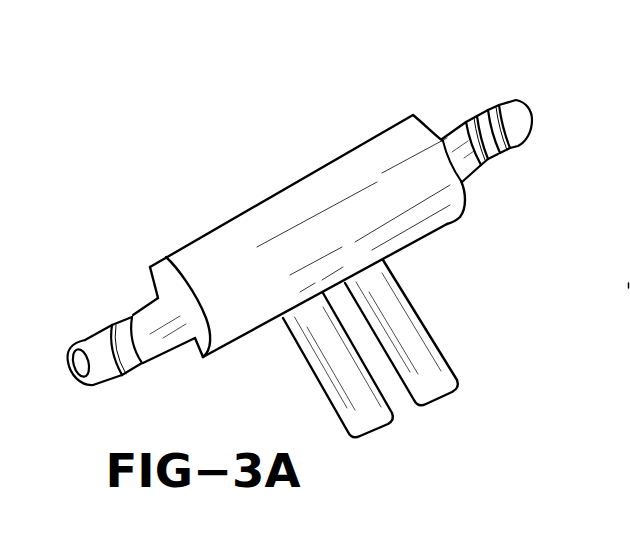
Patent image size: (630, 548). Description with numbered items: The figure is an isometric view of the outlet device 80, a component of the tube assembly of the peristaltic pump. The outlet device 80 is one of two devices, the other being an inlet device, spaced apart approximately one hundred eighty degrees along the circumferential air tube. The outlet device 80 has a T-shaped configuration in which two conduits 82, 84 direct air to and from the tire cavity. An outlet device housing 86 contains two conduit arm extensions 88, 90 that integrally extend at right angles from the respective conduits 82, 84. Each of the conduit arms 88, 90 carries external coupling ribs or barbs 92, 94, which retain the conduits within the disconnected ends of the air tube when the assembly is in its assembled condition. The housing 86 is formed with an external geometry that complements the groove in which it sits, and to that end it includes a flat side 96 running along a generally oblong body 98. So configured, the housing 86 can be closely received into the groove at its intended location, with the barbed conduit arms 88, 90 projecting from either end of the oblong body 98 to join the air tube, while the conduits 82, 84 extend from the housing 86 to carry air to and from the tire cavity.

The outlet device 80 is at (156, 155).
The conduit 82 is at (342, 368).
The conduit 84 is at (427, 354).
The outlet device housing 86 is at (337, 190).
The conduit arm extension 88 is at (463, 153).
The conduit arm extension 90 is at (163, 343).
The external coupling ribs or barbs 92 is at (467, 120).
The external coupling ribs or barbs 94 is at (96, 337).
The flat side 96 is at (255, 207).
The oblong body 98 is at (407, 220).